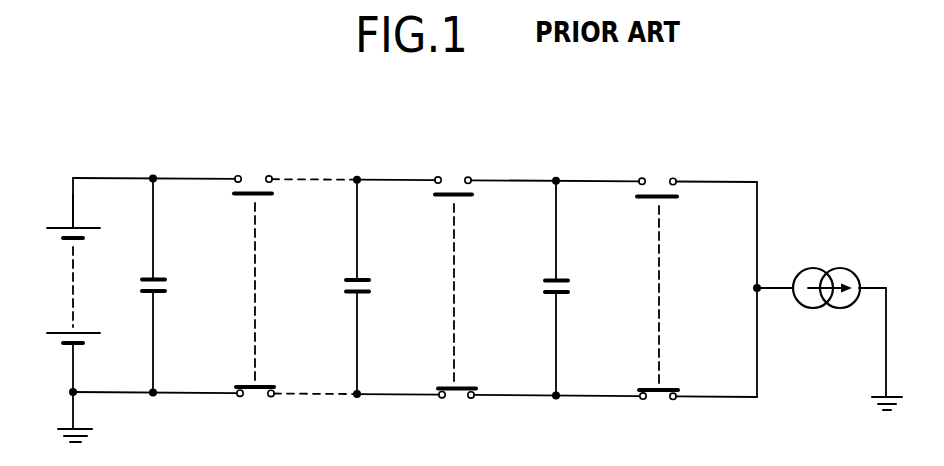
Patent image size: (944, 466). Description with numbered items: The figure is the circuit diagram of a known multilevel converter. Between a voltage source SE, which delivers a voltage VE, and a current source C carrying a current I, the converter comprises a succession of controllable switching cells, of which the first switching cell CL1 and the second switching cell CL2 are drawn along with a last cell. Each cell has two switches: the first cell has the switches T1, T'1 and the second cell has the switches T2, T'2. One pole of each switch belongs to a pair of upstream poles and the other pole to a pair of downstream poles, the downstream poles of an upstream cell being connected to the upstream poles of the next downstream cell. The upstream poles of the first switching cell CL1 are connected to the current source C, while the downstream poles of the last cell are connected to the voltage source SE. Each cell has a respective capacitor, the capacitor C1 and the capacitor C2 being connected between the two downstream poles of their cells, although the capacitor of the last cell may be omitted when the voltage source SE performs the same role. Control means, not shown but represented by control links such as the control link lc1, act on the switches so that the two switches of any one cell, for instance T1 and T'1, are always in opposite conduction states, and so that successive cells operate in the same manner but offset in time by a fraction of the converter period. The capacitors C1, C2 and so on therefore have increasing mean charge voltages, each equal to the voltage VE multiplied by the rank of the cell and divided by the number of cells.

The voltage VE is at (73, 208).
The voltage source SE is at (75, 270).
The capacitor of the second cell C2 is at (371, 283).
The switch of the second cell T2 is at (462, 197).
The second switch of the second cell T'2 is at (480, 368).
The second switching cell CL2 is at (466, 250).
The capacitor of the first cell C1 is at (570, 283).
The switch of the first cell T1 is at (672, 199).
The second switch of the first cell T'1 is at (678, 368).
The first switching cell CL1 is at (676, 250).
The control link lc1 is at (659, 298).
The current I is at (829, 229).
The current source C is at (820, 308).